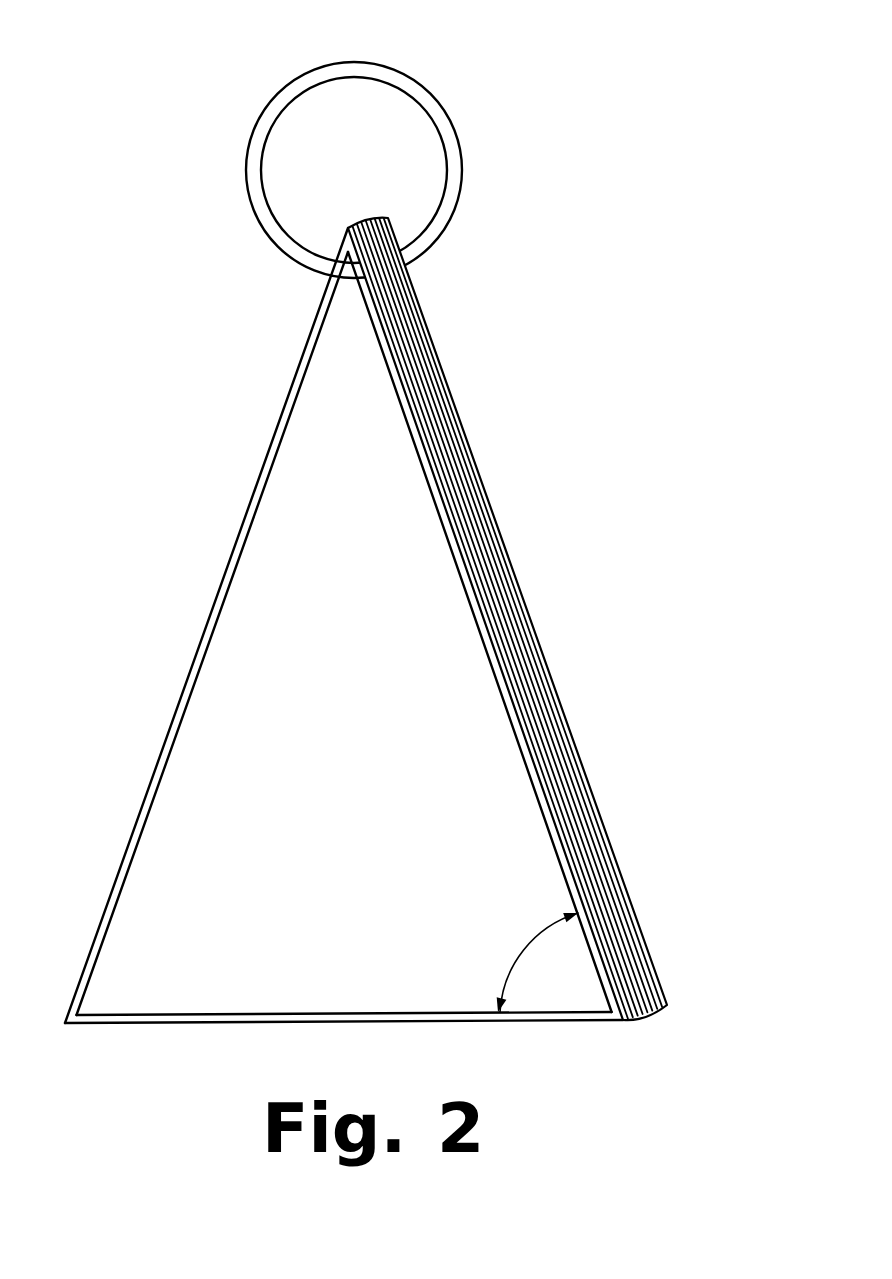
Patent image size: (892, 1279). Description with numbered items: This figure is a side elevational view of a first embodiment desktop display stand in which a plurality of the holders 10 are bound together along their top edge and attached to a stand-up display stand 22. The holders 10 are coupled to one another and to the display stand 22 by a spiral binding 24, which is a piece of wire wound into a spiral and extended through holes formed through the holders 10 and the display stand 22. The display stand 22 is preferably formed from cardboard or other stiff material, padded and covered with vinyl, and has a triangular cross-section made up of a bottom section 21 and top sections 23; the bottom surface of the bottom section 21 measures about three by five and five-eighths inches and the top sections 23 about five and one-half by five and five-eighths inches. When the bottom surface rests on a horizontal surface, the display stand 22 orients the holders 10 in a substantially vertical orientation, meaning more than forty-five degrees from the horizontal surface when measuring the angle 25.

The holders 10 is at (674, 1002).
The bottom section 21 is at (576, 1021).
The display stand 22 is at (322, 658).
The top sections 23 is at (187, 675).
The spiral binding 24 is at (383, 63).
The angle 25 is at (518, 952).